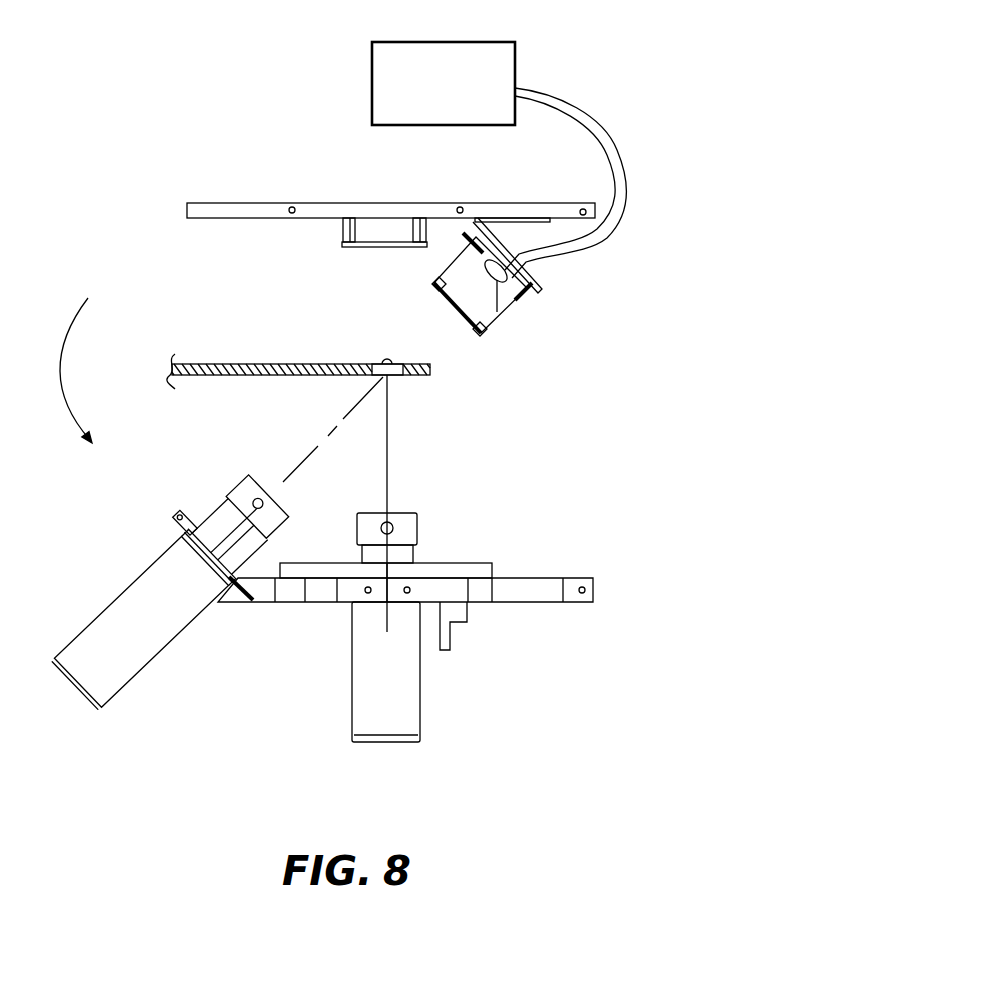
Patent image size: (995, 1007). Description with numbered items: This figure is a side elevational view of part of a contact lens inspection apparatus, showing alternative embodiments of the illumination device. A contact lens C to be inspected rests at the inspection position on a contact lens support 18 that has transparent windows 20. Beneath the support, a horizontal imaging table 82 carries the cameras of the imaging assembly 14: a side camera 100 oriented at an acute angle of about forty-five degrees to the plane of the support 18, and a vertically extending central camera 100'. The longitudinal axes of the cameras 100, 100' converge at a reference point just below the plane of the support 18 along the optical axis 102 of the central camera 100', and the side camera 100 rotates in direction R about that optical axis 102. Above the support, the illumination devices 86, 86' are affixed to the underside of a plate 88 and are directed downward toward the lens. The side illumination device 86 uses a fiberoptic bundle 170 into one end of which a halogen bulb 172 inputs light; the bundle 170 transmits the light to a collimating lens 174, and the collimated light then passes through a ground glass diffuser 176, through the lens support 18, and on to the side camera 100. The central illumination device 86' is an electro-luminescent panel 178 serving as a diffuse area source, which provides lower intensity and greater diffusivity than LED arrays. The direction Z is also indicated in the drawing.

The halogen bulb 172 is at (468, 43).
The fiberoptic bundle 170 is at (590, 117).
The plate 88 is at (333, 203).
The central illumination device 86' is at (341, 248).
The electro-luminescent panel 178 is at (388, 240).
The side illumination device 86 is at (520, 284).
The collimating lens 174 is at (506, 311).
The ground glass diffuser 176 is at (478, 336).
The direction of rotation R is at (77, 370).
The contact lens support 18 is at (193, 362).
The transparent window 20 is at (375, 378).
The contact lens C is at (372, 349).
The Z direction Z is at (256, 395).
The optical axis 102 is at (387, 457).
The imaging assembly 14 is at (267, 464).
The side camera 100 is at (144, 609).
The imaging table 82 is at (470, 603).
The central camera 100' is at (432, 627).